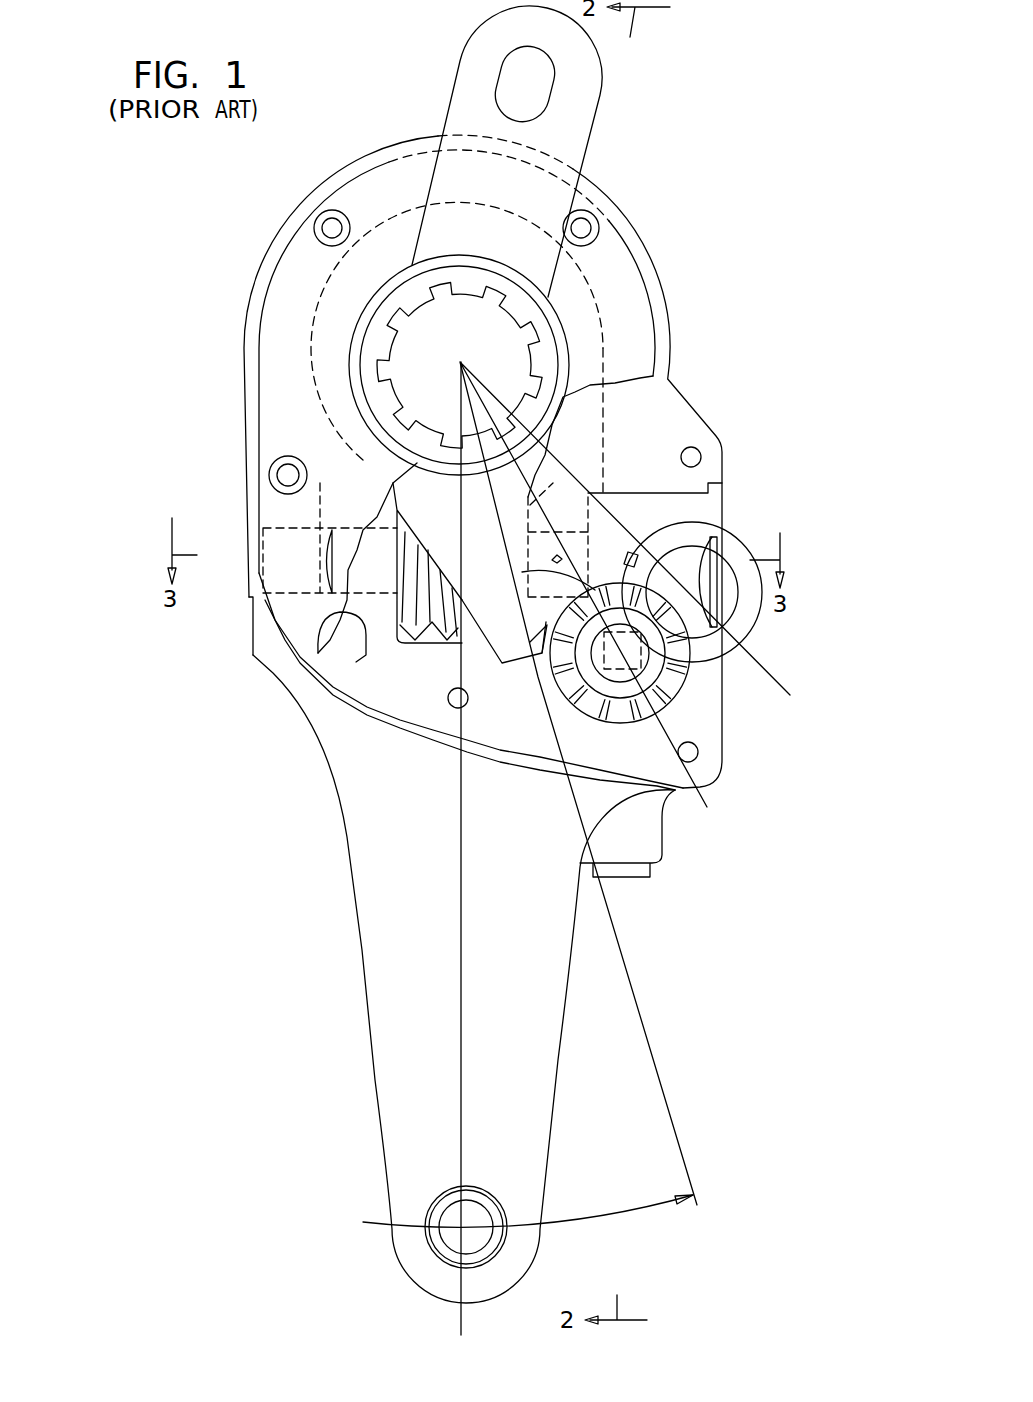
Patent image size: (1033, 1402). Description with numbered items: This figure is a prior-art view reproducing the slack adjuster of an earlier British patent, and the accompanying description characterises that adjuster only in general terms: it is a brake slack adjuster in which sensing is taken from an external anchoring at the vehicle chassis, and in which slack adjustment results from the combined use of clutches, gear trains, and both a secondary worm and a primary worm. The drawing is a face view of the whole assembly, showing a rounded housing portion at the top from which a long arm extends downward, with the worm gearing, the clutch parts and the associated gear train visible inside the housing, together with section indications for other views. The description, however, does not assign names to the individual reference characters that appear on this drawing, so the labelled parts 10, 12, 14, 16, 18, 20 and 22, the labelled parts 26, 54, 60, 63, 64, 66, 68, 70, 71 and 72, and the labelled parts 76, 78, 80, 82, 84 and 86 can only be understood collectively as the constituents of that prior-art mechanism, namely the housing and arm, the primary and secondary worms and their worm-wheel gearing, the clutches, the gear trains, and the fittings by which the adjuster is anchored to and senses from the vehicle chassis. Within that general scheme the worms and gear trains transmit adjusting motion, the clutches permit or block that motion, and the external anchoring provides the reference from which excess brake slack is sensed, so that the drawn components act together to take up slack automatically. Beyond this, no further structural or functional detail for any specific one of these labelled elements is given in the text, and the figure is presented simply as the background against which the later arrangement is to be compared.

The slack adjuster 10 is at (330, 772).
The arm 12 is at (522, 1127).
The worm wheel 14 is at (390, 388).
The splined bore 16 is at (408, 322).
The worm 18 is at (418, 640).
The housing 20 is at (250, 523).
The pawl 22 is at (472, 635).
The adjusting mechanism 26 is at (700, 512).
The gear 54 is at (702, 667).
The stop 60 is at (324, 632).
The bolt holes 63 is at (330, 226).
The cover 64 is at (587, 440).
The centerline 66 is at (496, 462).
The control arm 68 is at (575, 130).
The slot 70 is at (542, 77).
The worm shaft end 71 is at (334, 524).
The spring 72 is at (545, 668).
The clutch element 76 is at (543, 603).
The clutch element 78 is at (575, 563).
The link 80 is at (552, 559).
The pin 82 is at (630, 556).
The tooth 84 is at (535, 627).
The clutch spring 86 is at (520, 585).